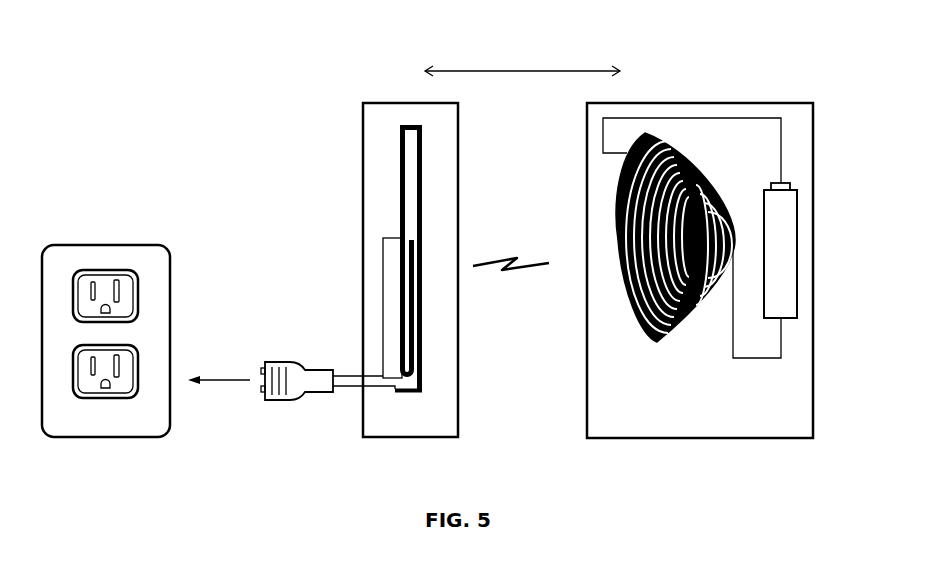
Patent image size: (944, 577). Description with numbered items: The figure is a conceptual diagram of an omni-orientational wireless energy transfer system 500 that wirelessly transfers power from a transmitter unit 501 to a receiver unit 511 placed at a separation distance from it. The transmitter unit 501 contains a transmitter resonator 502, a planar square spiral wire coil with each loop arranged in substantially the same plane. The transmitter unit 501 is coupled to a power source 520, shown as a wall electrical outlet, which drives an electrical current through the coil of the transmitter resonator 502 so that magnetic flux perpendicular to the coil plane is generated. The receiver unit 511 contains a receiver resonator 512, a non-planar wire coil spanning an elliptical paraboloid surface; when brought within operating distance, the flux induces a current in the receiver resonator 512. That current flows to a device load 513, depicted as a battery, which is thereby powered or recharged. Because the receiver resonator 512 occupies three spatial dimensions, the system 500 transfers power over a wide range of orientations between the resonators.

The omni-orientational wireless energy transfer system 500 is at (296, 76).
The transmitter unit 501 is at (428, 428).
The transmitter resonator 502 is at (435, 367).
The receiver unit 511 is at (719, 425).
The receiver resonator 512 is at (611, 335).
The device load 513 is at (799, 336).
The power source 520 is at (121, 429).